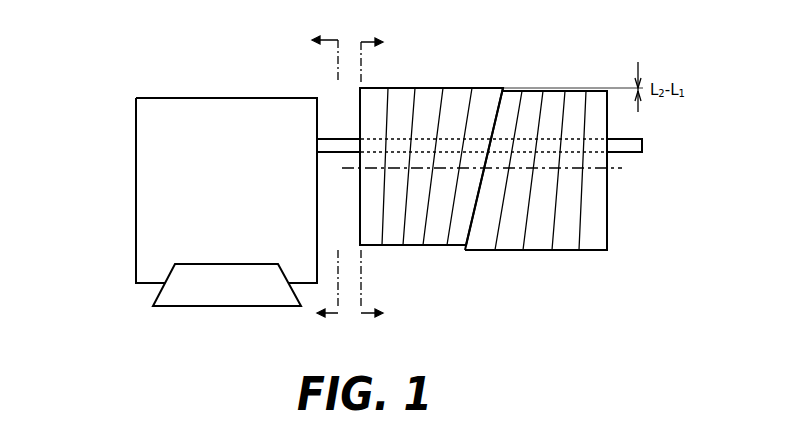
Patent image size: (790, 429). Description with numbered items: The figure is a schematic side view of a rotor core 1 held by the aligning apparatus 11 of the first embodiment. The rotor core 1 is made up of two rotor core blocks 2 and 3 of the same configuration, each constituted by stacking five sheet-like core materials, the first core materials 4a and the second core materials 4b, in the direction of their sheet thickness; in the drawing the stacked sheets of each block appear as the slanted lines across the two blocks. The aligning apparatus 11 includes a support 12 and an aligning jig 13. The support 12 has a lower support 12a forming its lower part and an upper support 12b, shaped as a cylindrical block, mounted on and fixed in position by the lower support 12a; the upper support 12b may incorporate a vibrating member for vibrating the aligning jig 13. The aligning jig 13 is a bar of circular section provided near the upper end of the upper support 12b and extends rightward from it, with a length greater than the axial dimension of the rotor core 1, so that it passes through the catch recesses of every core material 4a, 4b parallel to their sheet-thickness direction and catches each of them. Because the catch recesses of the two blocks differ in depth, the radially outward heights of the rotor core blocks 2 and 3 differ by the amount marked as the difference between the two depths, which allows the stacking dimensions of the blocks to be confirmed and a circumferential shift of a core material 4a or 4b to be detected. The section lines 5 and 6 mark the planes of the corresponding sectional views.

The rotor core 1 is at (589, 58).
The rotor core block 2 is at (501, 167).
The rotor core block 3 is at (559, 194).
The first core material 4a is at (575, 170).
The second core material 4b is at (432, 238).
The section line 5 is at (372, 179).
The section line 6 is at (325, 178).
The aligning apparatus 11 is at (190, 98).
The support 12 is at (168, 281).
The lower support 12a is at (152, 304).
The upper support 12b is at (136, 266).
The aligning jig 13 is at (633, 134).